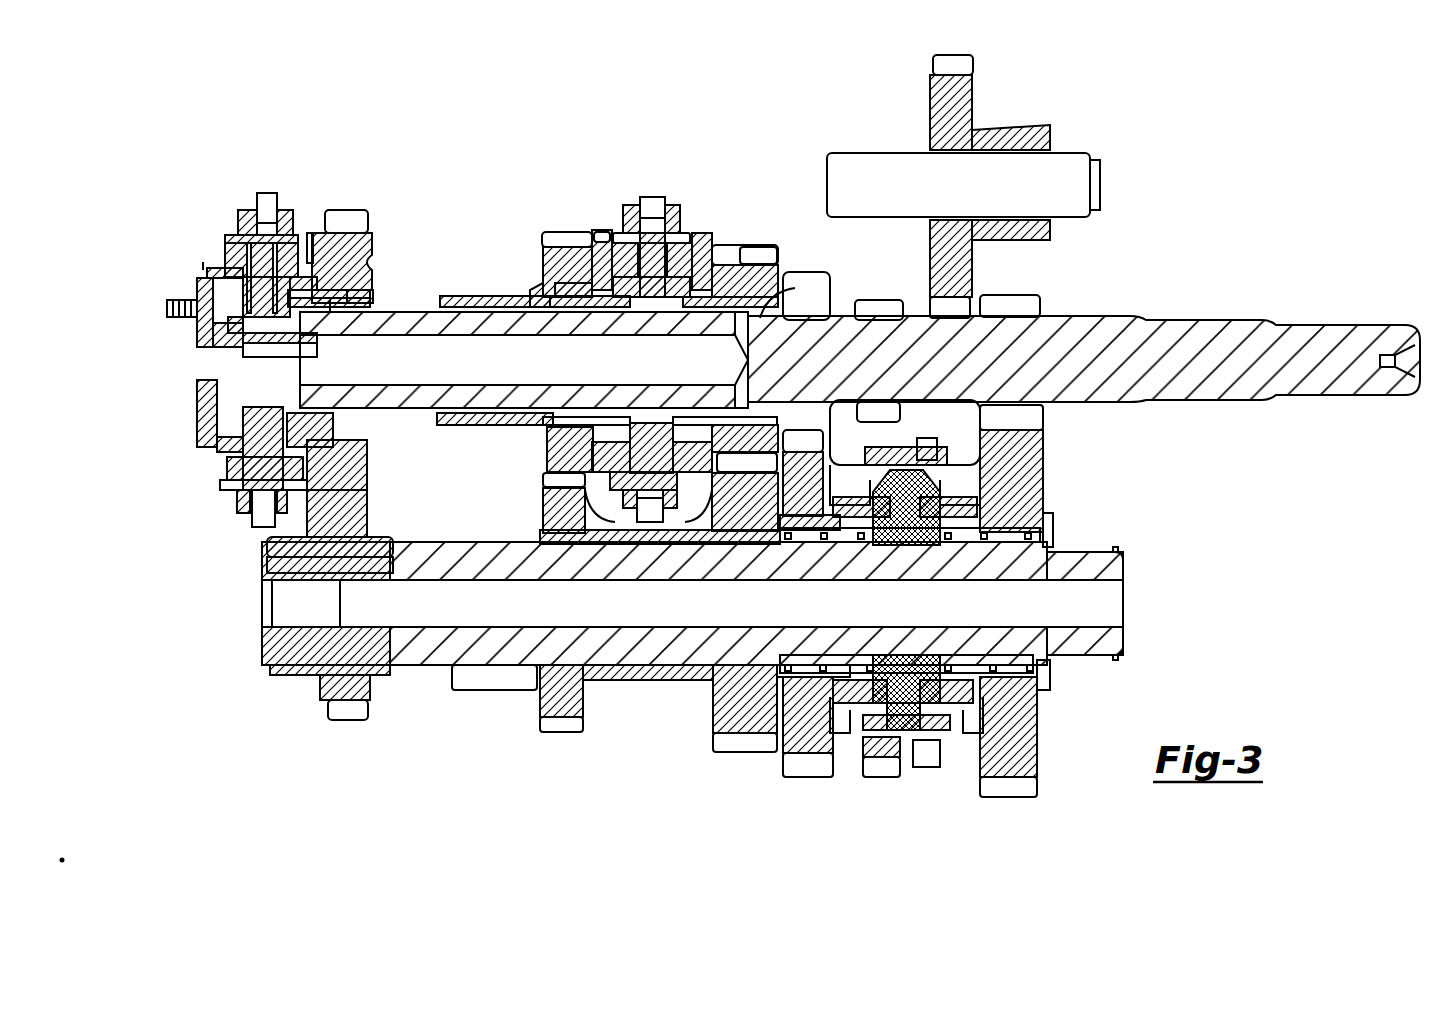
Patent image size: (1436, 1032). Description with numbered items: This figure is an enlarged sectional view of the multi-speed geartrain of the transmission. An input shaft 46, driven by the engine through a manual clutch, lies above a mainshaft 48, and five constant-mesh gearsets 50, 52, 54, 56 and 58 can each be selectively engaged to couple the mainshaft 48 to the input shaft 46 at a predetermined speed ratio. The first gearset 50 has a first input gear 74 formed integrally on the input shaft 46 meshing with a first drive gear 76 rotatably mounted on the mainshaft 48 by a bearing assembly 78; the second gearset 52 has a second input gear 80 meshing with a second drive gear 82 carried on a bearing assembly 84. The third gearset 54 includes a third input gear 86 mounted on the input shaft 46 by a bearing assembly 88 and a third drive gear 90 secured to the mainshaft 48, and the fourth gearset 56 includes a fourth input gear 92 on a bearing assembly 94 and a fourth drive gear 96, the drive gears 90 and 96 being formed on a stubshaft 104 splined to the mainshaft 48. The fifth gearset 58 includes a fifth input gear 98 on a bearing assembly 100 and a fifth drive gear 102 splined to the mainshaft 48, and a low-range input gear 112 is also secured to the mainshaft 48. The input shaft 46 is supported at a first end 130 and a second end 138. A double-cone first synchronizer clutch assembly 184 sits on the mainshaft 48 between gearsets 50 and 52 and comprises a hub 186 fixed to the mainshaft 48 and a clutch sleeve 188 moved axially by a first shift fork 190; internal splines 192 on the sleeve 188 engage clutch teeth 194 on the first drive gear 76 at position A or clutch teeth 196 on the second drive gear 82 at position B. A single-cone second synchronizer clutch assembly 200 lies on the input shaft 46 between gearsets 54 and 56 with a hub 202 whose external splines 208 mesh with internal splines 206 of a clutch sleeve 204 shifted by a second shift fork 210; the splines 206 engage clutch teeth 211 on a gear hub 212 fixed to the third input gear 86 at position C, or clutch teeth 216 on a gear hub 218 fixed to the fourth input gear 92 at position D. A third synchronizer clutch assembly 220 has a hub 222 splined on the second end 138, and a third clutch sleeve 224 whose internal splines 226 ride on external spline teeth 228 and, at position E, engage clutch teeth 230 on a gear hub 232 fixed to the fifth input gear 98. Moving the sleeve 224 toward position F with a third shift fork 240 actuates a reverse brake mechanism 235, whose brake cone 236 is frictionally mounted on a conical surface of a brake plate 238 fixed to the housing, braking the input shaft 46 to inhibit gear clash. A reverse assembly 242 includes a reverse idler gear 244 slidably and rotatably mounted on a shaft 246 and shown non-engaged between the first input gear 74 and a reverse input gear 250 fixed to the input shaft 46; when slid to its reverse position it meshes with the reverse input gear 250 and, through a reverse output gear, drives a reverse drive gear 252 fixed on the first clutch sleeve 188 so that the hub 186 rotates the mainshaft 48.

The input shaft 46 is at (1220, 340).
The mainshaft 48 is at (1090, 552).
The first gearset 50 is at (1020, 805).
The second gearset 52 is at (772, 762).
The third gearset 54 is at (748, 228).
The fourth gearset 56 is at (616, 241).
The fifth gearset 58 is at (365, 172).
The first input gear 74 is at (1040, 300).
The first drive gear 76 is at (1049, 476).
The bearing assembly 78 is at (1010, 536).
The second input gear 80 is at (822, 275).
The second drive gear 82 is at (800, 768).
The bearing assembly 84 is at (830, 525).
The third input gear 86 is at (765, 252).
The bearing assembly 88 is at (855, 303).
The third drive gear 90 is at (740, 745).
The fourth input gear 92 is at (545, 236).
The bearing assembly 94 is at (605, 300).
The fourth drive gear 96 is at (563, 728).
The fifth input gear 98 is at (346, 391).
The bearing assembly 100 is at (340, 320).
The fifth drive gear 102 is at (385, 672).
The stubshaft 104 is at (635, 682).
The low-range input gear 112 is at (490, 678).
The first end 130 is at (1368, 395).
The second end 138 is at (265, 383).
The first synchronizer clutch assembly 184 is at (913, 780).
The hub 186 is at (905, 545).
The clutch sleeve 188 is at (945, 758).
The first shift fork 190 is at (915, 440).
The internal splines 192 is at (903, 780).
The clutch teeth 194 is at (1005, 480).
The clutch teeth 196 is at (850, 480).
The second synchronizer clutch assembly 200 is at (652, 190).
The hub 202 is at (648, 300).
The clutch sleeve 204 is at (675, 232).
The internal splines 206 is at (628, 232).
The external splines 208 is at (677, 490).
The second shift fork 210 is at (640, 522).
The clutch teeth 211 is at (740, 510).
The gear hub 212 is at (695, 300).
The clutch teeth 216 is at (585, 515).
The gear hub 218 is at (575, 300).
The third synchronizer clutch assembly 220 is at (195, 549).
The hub 222 is at (225, 476).
The third clutch sleeve 224 is at (237, 514).
The internal splines 226 is at (260, 516).
The external spline teeth 228 is at (248, 225).
The clutch teeth 230 is at (318, 240).
The gear hub 232 is at (350, 262).
The reverse brake mechanism 235 is at (224, 372).
The brake cone 236 is at (205, 268).
The brake plate 238 is at (200, 416).
The third shift fork 240 is at (262, 195).
The reverse assembly 242 is at (1021, 186).
The reverse idler gear 244 is at (970, 78).
The shaft 246 is at (1100, 165).
The reverse input gear 250 is at (888, 305).
The reverse drive gear 252 is at (880, 760).